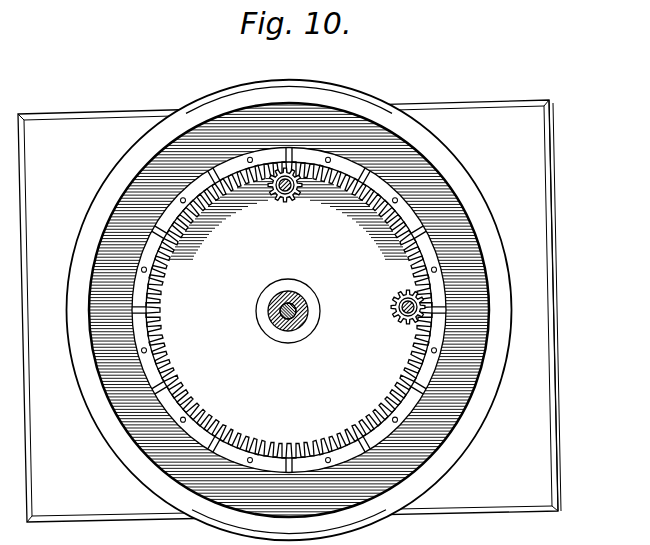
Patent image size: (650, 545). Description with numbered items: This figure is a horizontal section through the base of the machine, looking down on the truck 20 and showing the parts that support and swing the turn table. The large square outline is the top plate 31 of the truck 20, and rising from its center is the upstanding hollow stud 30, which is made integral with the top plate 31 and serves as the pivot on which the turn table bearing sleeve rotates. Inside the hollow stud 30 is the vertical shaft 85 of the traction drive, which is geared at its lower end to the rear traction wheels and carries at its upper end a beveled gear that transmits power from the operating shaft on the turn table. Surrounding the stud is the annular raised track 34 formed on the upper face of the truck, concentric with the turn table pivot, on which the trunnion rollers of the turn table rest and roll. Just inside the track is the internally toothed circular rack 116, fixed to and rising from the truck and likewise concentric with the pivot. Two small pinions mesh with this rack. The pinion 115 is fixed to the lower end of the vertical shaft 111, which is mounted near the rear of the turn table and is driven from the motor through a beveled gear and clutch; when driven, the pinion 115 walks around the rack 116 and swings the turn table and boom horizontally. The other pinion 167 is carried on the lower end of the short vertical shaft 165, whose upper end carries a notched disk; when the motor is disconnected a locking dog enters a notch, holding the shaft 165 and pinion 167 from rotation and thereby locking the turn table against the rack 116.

The truck 20 is at (598, 393).
The top plate 31 is at (288, 311).
The annular raised track 34 is at (288, 311).
The hollow stud 30 is at (273, 305).
The vertical shaft 85 is at (288, 330).
The internally toothed circular rack 116 is at (387, 409).
The short vertical shaft 165 is at (299, 193).
The pinion 167 is at (283, 200).
The pinion 115 is at (394, 311).
The vertical shaft 111 is at (405, 304).